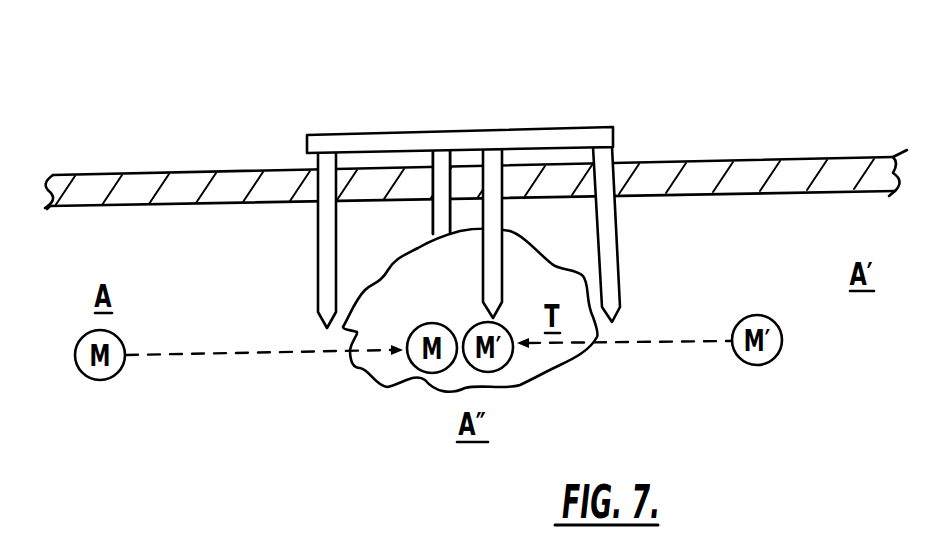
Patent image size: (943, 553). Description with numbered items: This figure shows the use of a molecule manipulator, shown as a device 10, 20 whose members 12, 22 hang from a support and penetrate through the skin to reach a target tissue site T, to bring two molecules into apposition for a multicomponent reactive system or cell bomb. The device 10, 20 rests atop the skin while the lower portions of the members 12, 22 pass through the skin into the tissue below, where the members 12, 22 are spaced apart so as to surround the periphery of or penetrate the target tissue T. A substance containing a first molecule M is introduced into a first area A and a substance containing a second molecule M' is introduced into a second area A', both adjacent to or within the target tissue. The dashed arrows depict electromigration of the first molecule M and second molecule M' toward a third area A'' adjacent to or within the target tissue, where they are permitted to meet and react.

The device 10 is at (517, 211).
The device 20 is at (517, 211).
The members 12 is at (522, 269).
The members 22 is at (620, 255).